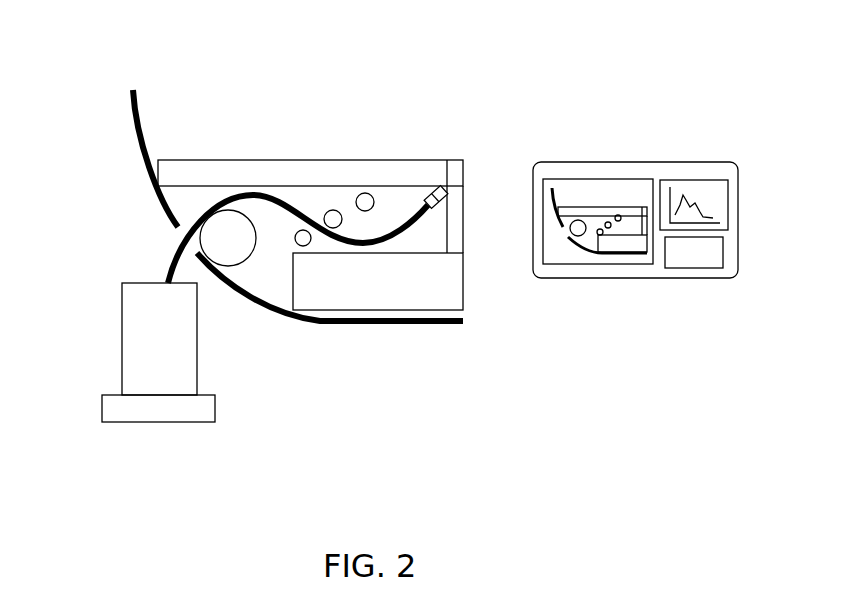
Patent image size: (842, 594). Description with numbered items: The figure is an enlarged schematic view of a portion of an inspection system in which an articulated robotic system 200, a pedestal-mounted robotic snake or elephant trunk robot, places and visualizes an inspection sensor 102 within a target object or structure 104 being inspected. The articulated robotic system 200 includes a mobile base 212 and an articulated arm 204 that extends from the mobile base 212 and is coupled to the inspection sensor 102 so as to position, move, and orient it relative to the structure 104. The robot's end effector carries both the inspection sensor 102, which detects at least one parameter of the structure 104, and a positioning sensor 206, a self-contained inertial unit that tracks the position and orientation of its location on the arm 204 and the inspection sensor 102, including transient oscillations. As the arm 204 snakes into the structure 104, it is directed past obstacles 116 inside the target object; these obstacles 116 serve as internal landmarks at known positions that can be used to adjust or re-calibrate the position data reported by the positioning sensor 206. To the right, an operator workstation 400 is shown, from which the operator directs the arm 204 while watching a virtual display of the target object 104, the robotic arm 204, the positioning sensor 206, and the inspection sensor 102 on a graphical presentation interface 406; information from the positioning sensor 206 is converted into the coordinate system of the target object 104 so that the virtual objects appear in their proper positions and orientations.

The target object or structure 104 is at (100, 97).
The articulated arm 204 is at (239, 193).
The inspection sensor 102 is at (429, 186).
The positioning sensor 206 is at (418, 195).
The obstacles 116 is at (365, 211).
The mobile base 212 is at (122, 352).
The articulated robotic system 200 is at (115, 434).
The operator workstation 400 is at (687, 116).
The graphical presentation interface 406 is at (732, 267).